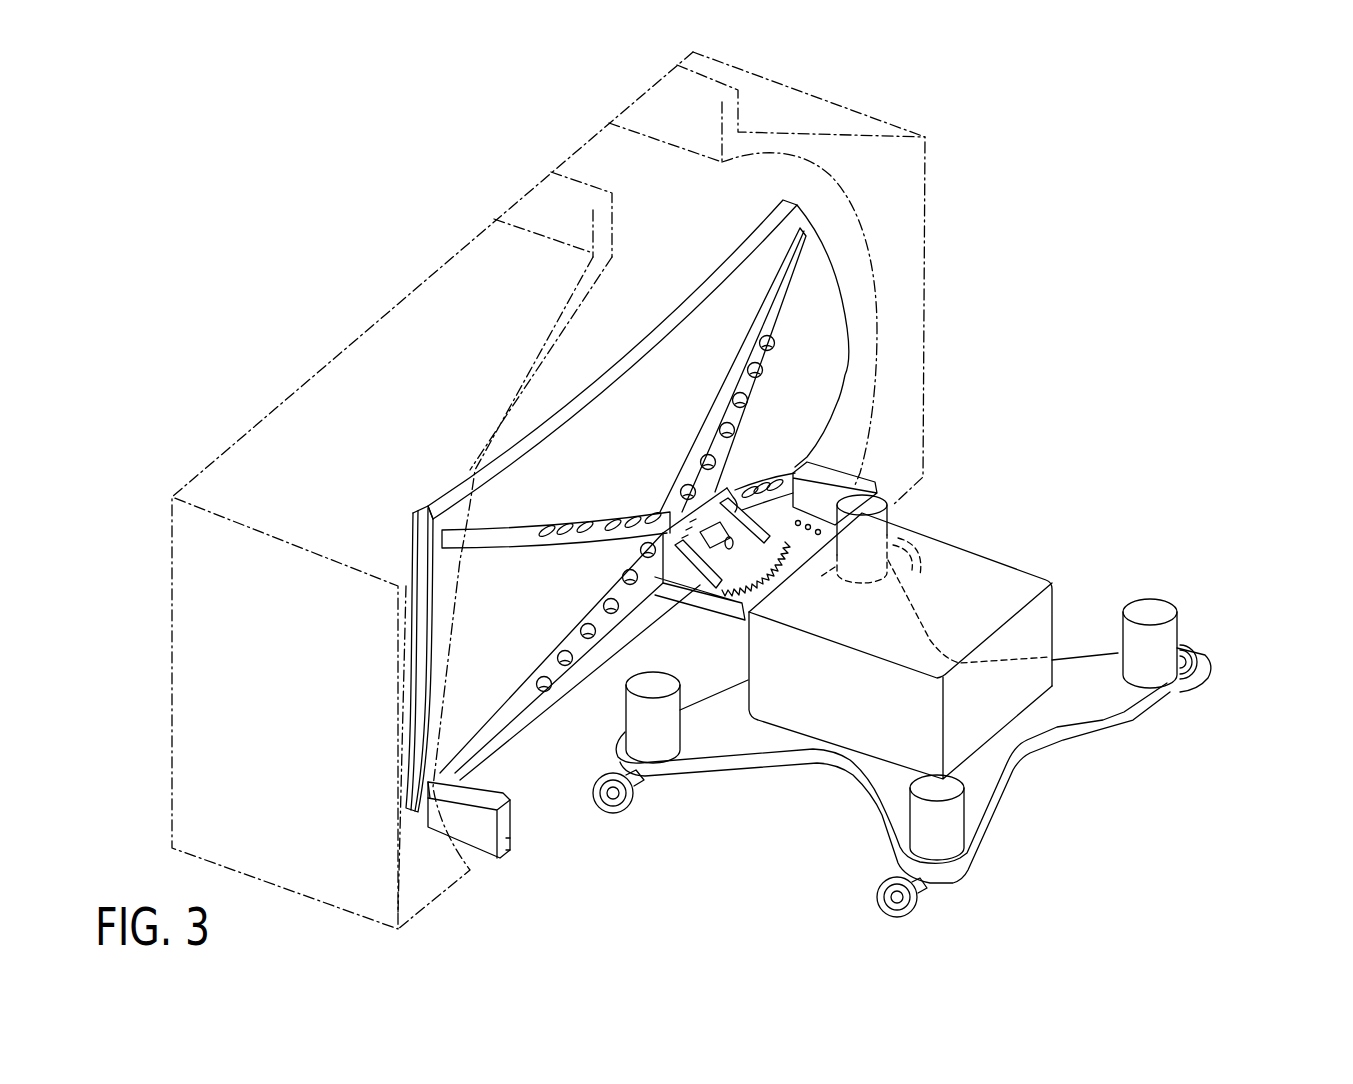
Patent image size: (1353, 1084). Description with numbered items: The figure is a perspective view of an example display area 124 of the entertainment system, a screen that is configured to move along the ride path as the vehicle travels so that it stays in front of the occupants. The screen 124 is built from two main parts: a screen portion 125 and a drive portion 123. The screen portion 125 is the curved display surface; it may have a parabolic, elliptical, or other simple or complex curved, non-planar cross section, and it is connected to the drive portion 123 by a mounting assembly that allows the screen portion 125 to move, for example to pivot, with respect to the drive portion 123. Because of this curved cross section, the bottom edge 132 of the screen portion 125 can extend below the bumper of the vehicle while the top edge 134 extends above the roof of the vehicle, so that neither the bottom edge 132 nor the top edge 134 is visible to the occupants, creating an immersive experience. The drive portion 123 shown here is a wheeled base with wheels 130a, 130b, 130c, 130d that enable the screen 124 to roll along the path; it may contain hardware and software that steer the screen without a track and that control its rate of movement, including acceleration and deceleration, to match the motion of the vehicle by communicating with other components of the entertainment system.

The drive portion 123 is at (1230, 560).
The display area 124 is at (848, 276).
The screen portion 125 is at (612, 370).
The wheel 130a is at (628, 813).
The wheel 130b is at (886, 884).
The wheel 130c is at (1197, 647).
The wheel 130d is at (928, 533).
The bottom edge 132 is at (410, 800).
The top edge 134 is at (426, 508).